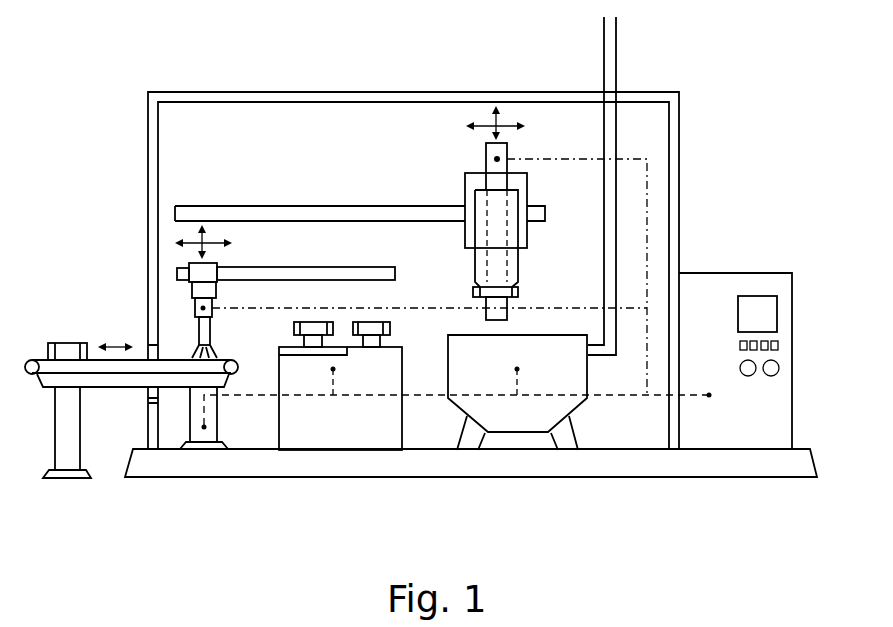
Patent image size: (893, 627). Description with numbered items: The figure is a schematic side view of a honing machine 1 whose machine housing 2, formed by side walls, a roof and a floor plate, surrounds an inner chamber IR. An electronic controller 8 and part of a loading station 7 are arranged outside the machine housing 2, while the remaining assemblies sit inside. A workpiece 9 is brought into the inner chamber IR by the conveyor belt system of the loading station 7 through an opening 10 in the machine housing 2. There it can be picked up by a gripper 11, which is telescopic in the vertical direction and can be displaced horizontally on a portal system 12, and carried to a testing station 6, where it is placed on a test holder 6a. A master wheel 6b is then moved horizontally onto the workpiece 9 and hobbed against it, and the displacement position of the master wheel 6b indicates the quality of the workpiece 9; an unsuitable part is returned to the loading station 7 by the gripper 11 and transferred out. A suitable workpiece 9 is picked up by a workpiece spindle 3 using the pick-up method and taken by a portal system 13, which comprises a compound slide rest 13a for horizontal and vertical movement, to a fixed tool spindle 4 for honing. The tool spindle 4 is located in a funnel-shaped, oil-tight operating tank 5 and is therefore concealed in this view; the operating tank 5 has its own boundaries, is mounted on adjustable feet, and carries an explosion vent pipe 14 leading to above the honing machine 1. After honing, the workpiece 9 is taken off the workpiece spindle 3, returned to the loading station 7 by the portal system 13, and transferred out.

The honing machine 1 is at (712, 155).
The machine housing 2 is at (673, 231).
The workpiece spindle 3 is at (518, 258).
The tool spindle 4 is at (517, 424).
The operating tank 5 is at (577, 412).
The testing station 6 is at (338, 440).
The test holder 6a is at (373, 346).
The master wheel 6b is at (314, 346).
The loading station 7 is at (129, 383).
The electronic controller 8 is at (773, 389).
The workpiece 9 is at (67, 350).
The opening 10 is at (147, 352).
The gripper 11 is at (200, 288).
The portal system 12 is at (292, 272).
The portal system 13 is at (262, 215).
The compound slide rest 13a is at (517, 179).
The explosion vent pipe 14 is at (604, 63).
The inner chamber IR is at (283, 133).